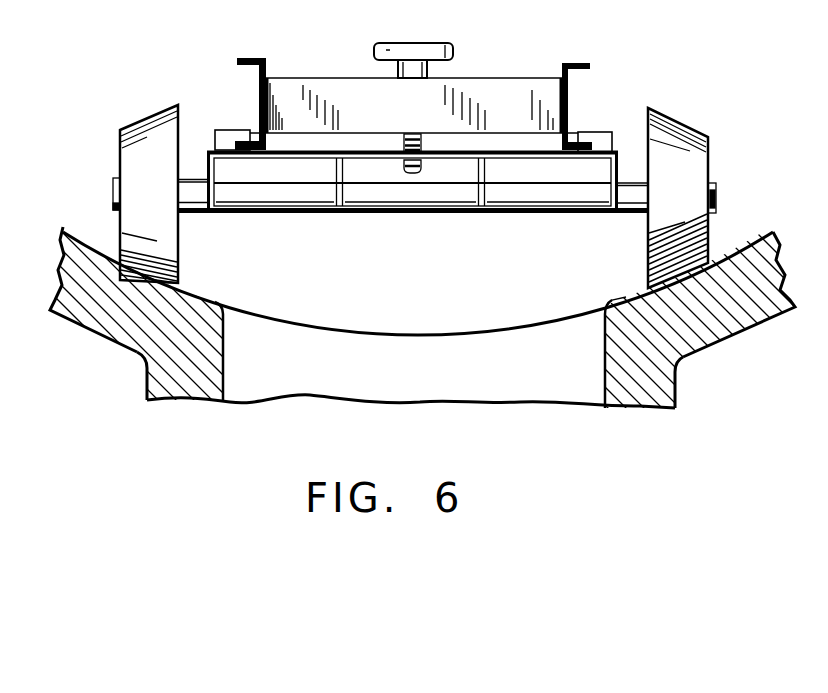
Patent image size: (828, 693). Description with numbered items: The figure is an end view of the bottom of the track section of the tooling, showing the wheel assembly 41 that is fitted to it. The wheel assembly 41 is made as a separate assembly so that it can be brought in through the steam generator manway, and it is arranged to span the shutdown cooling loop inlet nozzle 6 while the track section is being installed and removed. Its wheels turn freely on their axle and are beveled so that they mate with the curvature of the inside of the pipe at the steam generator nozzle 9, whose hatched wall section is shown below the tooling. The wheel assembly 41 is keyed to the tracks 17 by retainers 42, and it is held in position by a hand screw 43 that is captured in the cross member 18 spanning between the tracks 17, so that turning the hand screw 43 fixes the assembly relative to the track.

The shutdown cooling loop inlet nozzle 6 is at (424, 392).
The steam generator nozzle 9 is at (618, 298).
The tracks 17 is at (580, 63).
The cross member 18 is at (481, 78).
The wheel assembly 41 is at (284, 213).
The retainers 42 is at (596, 132).
The hand screw 43 is at (384, 42).